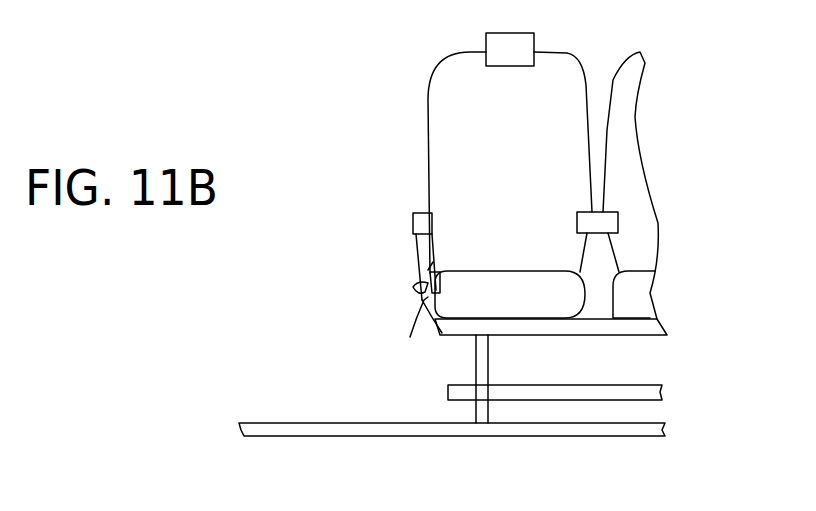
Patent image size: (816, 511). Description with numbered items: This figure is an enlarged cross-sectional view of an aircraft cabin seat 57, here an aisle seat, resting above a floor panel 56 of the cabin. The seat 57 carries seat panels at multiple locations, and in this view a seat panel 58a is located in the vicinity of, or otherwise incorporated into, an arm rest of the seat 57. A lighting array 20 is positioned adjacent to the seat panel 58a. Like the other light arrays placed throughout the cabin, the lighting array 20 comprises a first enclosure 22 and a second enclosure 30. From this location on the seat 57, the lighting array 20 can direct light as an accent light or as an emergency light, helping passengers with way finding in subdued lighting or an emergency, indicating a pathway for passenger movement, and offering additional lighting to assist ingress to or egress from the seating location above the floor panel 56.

The seat 57 is at (437, 152).
The seat panel 58a is at (425, 250).
The first enclosure 22 is at (436, 268).
The second enclosure 30 is at (415, 287).
The lighting array 20 is at (413, 334).
The floor panel 56 is at (263, 423).